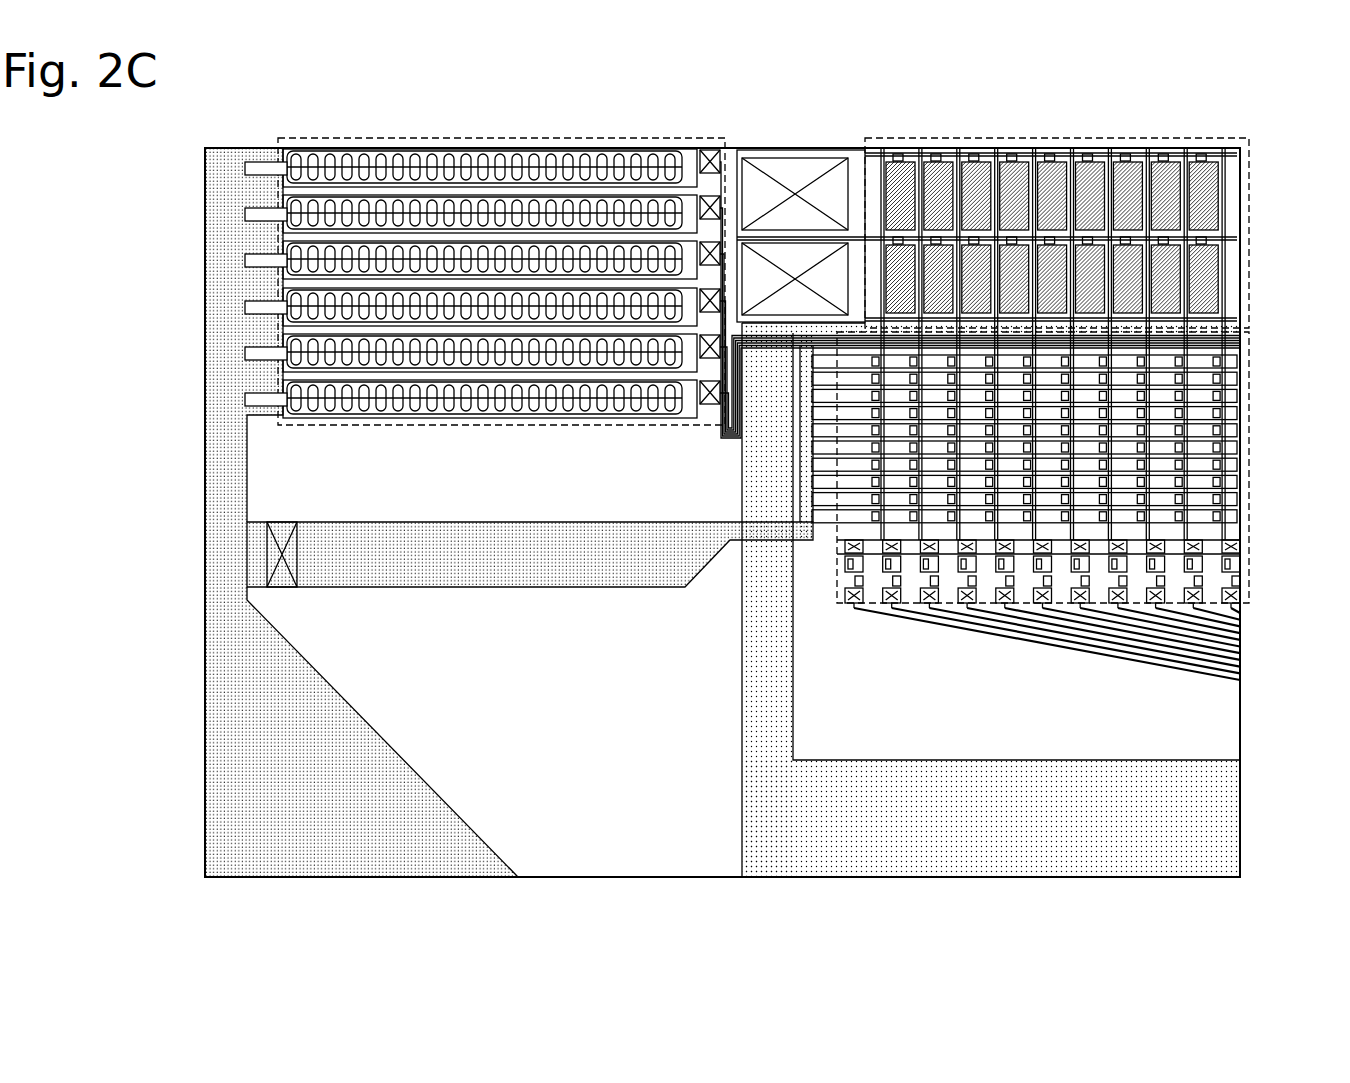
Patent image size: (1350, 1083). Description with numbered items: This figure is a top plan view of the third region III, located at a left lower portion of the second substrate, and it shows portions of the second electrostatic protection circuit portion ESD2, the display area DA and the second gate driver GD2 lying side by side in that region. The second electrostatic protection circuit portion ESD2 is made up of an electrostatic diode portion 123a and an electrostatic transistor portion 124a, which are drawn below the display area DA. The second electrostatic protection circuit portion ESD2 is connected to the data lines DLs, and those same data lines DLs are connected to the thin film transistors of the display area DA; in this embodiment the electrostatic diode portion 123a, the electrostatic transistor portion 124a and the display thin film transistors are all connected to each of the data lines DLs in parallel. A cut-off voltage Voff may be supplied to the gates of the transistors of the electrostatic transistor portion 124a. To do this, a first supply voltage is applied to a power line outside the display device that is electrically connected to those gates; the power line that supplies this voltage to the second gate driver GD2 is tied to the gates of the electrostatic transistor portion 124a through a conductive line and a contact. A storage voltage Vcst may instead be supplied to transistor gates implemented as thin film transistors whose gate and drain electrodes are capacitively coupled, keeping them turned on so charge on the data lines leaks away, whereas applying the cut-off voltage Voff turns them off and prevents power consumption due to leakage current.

The second gate driver GD2 is at (630, 425).
The display area DA is at (1250, 258).
The electrostatic transistor portion 124a is at (1262, 353).
The second electrostatic protection circuit portion ESD2 is at (1081, 470).
The electrostatic diode portion 123a is at (1262, 540).
The data lines DLs is at (1262, 612).
The cut-off voltage Voff is at (527, 562).
The storage voltage Vcst is at (1022, 824).
The third region III is at (203, 235).